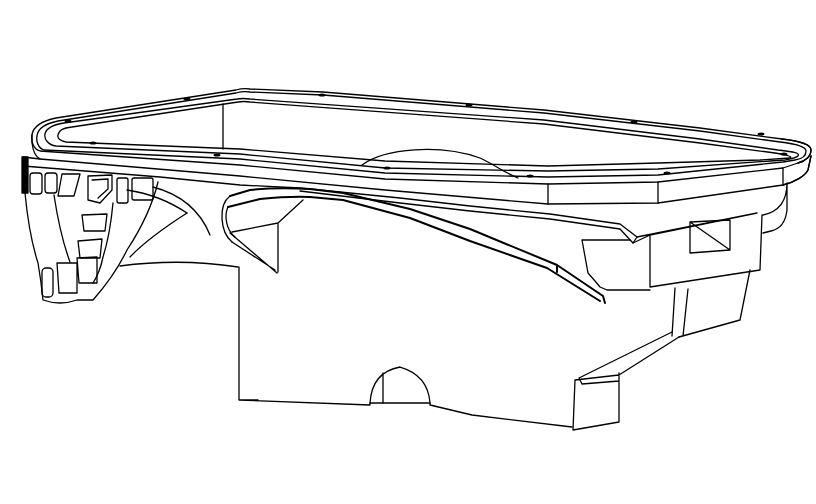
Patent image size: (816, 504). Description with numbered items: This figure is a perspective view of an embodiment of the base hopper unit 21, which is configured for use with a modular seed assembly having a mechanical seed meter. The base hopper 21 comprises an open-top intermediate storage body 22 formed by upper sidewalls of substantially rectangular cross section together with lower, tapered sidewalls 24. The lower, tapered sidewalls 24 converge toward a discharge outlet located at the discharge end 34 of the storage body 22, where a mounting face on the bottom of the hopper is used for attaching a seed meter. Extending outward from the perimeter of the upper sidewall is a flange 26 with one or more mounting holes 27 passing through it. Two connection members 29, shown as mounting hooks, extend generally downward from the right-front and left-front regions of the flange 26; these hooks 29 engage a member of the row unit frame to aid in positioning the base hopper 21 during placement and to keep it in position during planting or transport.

The base hopper unit 21 is at (602, 62).
The open-top intermediate storage body 22 is at (507, 145).
The lower, tapered sidewalls 24 is at (666, 350).
The flange 26 is at (115, 112).
The mounting holes 27 is at (737, 133).
The connection members 29 is at (97, 288).
The discharge end 34 is at (319, 402).